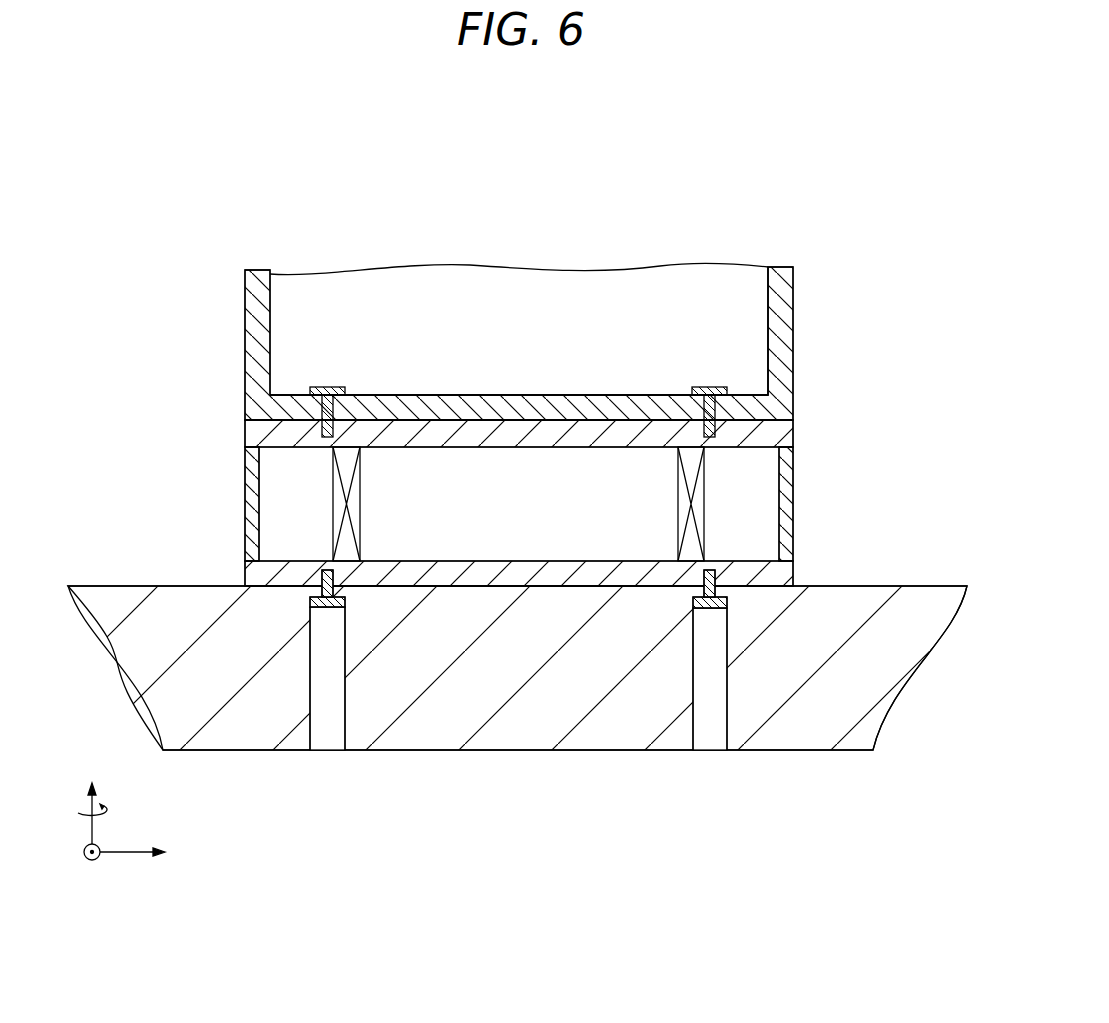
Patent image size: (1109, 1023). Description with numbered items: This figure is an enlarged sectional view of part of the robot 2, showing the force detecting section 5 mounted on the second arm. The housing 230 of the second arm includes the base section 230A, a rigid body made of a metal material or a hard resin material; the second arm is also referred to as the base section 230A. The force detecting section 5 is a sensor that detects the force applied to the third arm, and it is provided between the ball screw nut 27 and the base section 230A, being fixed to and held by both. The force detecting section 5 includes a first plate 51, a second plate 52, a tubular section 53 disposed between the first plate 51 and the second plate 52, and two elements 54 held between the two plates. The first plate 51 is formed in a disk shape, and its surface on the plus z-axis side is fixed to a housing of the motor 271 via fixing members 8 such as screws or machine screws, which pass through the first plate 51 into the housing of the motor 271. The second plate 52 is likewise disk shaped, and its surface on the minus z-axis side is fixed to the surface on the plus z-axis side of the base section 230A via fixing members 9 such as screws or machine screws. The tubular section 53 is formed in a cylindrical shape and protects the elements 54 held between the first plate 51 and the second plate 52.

The robot 2 is at (864, 174).
The ball screw nut 27 is at (795, 281).
The motor 271 is at (780, 337).
The force detecting section 5 is at (531, 504).
The first plate 51 is at (780, 434).
The second plate 52 is at (780, 574).
The tubular section 53 is at (793, 520).
The elements 54 is at (348, 463).
The fixing members 8 is at (327, 388).
The fixing members 9 is at (325, 607).
The base section 230A is at (526, 625).
The housing 230 is at (897, 586).